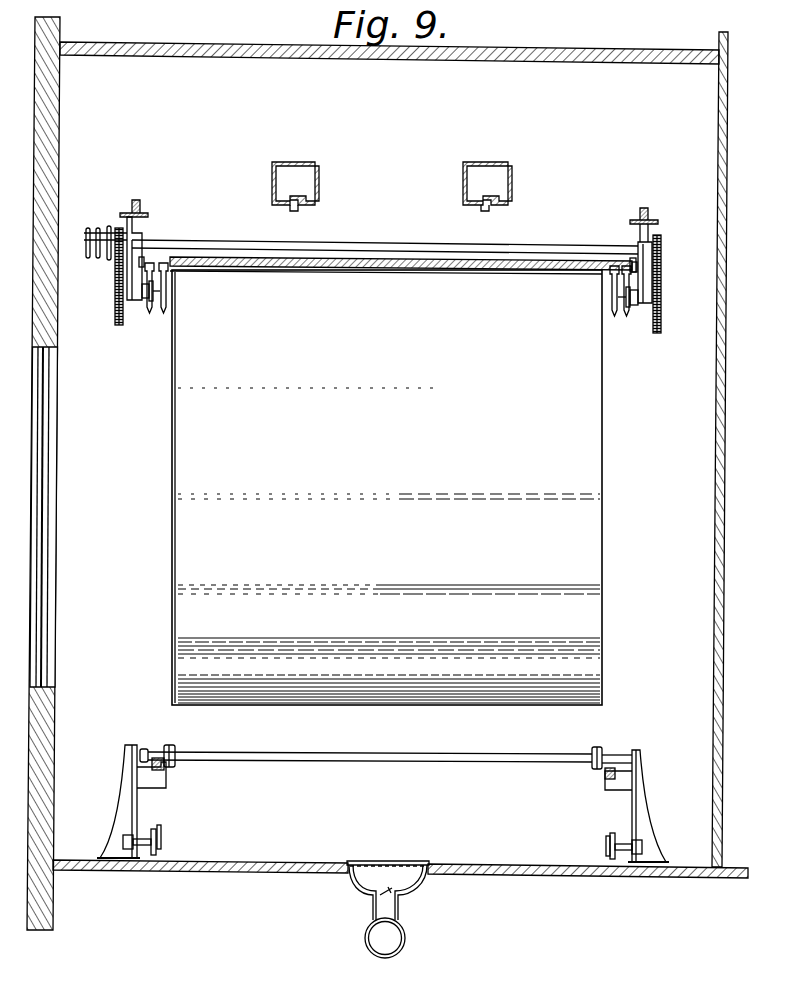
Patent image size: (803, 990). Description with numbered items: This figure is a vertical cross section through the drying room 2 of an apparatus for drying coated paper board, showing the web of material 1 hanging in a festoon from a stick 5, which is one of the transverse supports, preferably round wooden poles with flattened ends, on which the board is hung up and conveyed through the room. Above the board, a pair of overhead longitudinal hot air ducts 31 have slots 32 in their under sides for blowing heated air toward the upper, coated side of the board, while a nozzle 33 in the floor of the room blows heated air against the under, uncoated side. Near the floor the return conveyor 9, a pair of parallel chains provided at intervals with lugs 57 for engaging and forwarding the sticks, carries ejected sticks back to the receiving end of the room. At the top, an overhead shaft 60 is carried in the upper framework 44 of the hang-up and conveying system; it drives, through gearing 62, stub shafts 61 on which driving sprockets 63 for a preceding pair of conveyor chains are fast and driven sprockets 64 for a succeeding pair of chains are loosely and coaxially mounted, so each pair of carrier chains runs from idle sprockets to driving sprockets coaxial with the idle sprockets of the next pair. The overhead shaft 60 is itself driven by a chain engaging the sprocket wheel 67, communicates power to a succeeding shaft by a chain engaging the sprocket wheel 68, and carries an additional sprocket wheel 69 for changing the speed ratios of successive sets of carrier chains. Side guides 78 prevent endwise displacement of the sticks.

The web of material 1 is at (387, 487).
The drying room 2 is at (497, 49).
The sticks 5 is at (470, 269).
The return conveyor 9 is at (157, 759).
The overhead longitudinal hot air ducts 31 is at (291, 162).
The slots 32 is at (296, 212).
The nozzles 33 is at (400, 861).
The upper framework 44 is at (140, 208).
The lugs 57 is at (176, 752).
The overhead shafts 60 is at (190, 241).
The stub shafts 61 is at (146, 292).
The gearing 62 is at (118, 268).
The driving sprockets 63 is at (150, 314).
The driven sprockets 64 is at (163, 314).
The sprocket wheel 67 is at (98, 228).
The sprocket wheel 68 is at (88, 228).
The additional sprocket wheel 69 is at (112, 226).
The side guides 78 is at (142, 258).